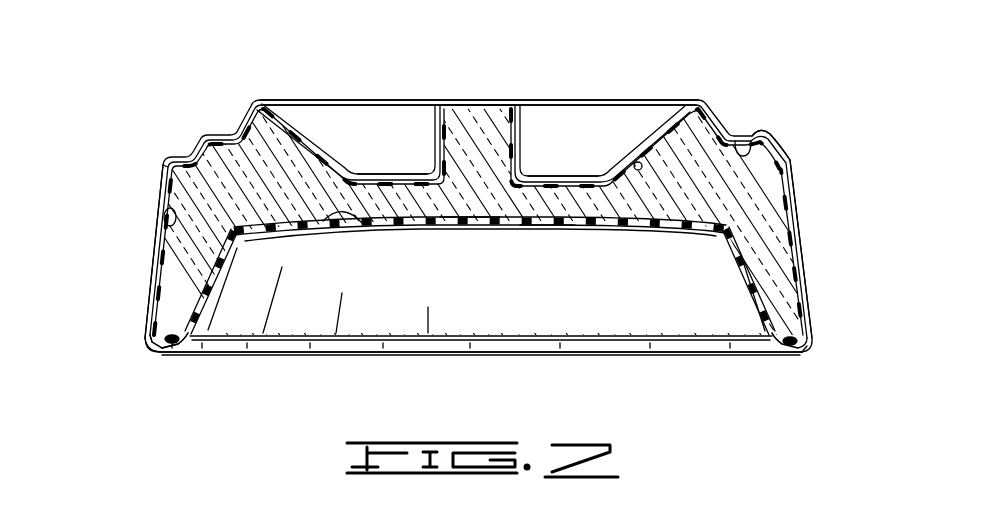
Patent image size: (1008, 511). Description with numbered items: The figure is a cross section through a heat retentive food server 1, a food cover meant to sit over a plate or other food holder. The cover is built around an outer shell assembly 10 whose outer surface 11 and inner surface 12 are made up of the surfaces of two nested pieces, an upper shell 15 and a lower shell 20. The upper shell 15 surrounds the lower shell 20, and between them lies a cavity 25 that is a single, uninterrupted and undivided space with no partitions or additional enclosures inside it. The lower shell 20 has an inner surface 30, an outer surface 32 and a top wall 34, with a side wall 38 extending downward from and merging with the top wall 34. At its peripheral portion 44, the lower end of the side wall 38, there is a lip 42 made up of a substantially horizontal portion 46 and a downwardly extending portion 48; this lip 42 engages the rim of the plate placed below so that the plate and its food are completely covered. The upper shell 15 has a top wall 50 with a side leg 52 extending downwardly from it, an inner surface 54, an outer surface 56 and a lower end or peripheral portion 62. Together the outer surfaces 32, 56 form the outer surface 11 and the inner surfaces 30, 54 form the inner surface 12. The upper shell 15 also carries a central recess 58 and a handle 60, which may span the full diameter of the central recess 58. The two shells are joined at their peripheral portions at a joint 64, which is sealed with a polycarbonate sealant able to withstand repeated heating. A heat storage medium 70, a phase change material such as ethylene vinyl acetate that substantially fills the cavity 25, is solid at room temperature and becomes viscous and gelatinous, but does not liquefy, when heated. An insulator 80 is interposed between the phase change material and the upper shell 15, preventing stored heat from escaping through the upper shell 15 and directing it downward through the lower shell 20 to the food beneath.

The heat retentive food server 1 is at (752, 76).
The outer shell assembly 10 is at (467, 225).
The outer surface 11 is at (636, 160).
The inner surface 12 is at (628, 170).
The upper shell 15 is at (297, 108).
The lower shell 20 is at (203, 306).
The cavity 25 is at (780, 215).
The inner surface 30 is at (363, 225).
The outer surface 32 is at (547, 230).
The top wall 34 is at (473, 222).
The side wall 38 is at (238, 250).
The lip 42 is at (481, 384).
The peripheral portion 44 is at (163, 347).
The substantially horizontal portion 46 is at (178, 337).
The downwardly extending portion 48 is at (158, 350).
The top wall 50 is at (368, 165).
The side leg 52 is at (157, 268).
The inner surface 54 is at (165, 217).
The outer surface 56 is at (163, 170).
The central recess 58 is at (560, 131).
The handle 60 is at (478, 103).
The peripheral portion 62 is at (150, 334).
The joint 64 is at (147, 339).
The heat storage medium 70 is at (756, 187).
The insulator 80 is at (760, 133).